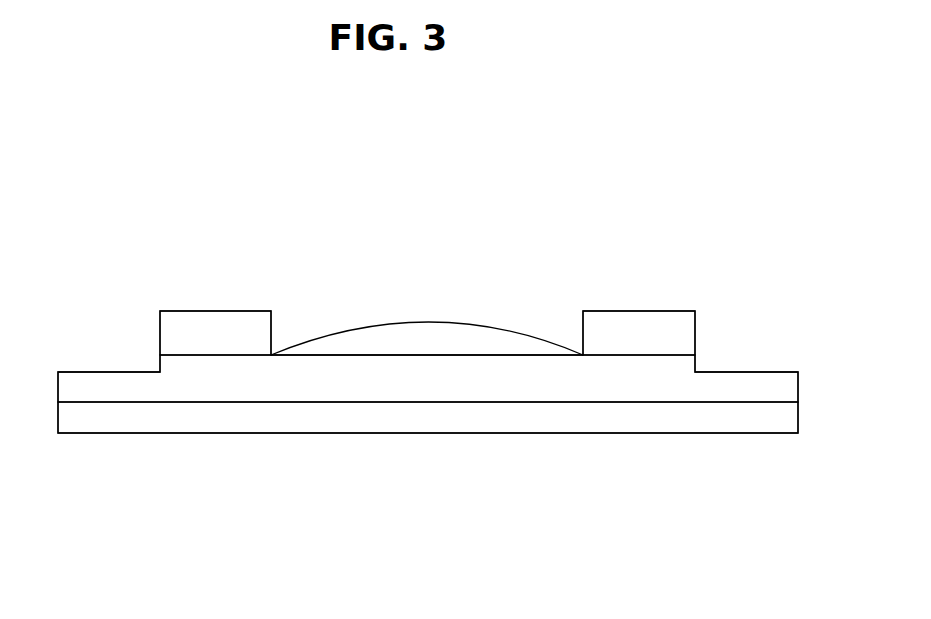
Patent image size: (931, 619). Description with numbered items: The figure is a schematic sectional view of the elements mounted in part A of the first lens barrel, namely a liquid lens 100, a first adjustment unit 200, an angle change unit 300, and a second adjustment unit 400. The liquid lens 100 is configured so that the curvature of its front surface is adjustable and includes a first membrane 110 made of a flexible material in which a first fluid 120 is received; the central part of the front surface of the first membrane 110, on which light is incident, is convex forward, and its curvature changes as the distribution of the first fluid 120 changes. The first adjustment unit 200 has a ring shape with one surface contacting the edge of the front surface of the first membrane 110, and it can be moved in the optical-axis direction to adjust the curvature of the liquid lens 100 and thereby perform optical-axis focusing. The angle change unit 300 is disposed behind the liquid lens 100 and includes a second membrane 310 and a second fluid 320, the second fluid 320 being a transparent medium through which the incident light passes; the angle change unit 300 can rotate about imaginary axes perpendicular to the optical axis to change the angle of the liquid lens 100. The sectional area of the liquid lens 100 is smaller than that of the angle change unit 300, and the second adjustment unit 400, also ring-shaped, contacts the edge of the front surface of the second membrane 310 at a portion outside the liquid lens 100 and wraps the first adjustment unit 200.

The liquid lens 100 is at (493, 227).
The first membrane 110 is at (474, 327).
The first fluid 120 is at (368, 343).
The first adjustment unit 200 is at (639, 325).
The angle change unit 300 is at (428, 460).
The second membrane 310 is at (240, 434).
The second fluid 320 is at (222, 523).
The second adjustment unit 400 is at (750, 392).
The part A is at (722, 205).